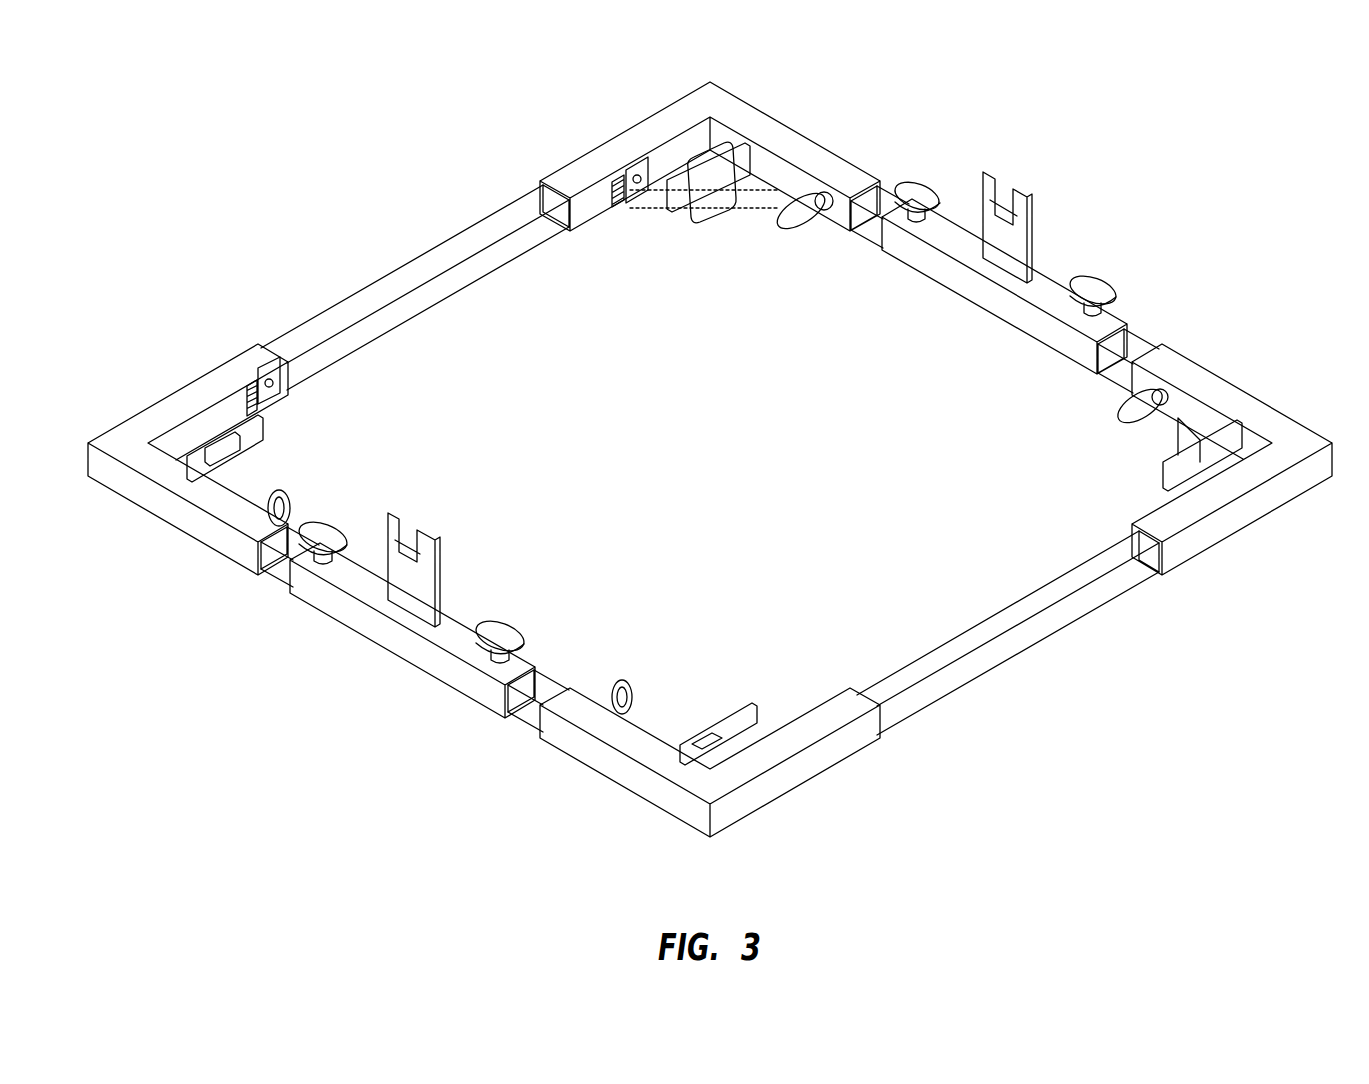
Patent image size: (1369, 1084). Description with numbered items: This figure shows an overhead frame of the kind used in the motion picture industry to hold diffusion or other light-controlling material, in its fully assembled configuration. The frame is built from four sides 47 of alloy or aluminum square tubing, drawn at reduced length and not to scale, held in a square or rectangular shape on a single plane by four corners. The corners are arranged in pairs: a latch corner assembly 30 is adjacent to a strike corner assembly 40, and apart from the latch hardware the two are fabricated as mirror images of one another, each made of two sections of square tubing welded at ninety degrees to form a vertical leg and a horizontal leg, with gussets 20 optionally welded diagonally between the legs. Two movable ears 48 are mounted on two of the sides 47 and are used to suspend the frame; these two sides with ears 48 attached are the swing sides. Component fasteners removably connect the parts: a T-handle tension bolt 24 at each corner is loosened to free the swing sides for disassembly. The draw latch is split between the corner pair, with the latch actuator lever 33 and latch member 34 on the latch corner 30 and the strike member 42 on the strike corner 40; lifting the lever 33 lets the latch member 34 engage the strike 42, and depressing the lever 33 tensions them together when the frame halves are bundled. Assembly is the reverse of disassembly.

The gussets 20 is at (740, 206).
The T-handle tension bolt 24 is at (800, 198).
The latch corner assembly 30 is at (612, 150).
The latch actuator lever 33 is at (705, 160).
The latch member 34 is at (700, 215).
The strike corner assembly 40 is at (130, 485).
The draw latch strike member half 42 is at (240, 450).
The side 47 is at (403, 272).
The ear 48 is at (1022, 228).